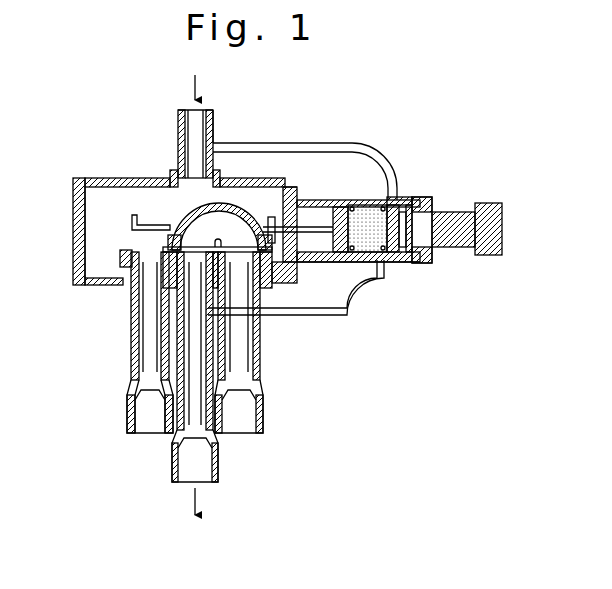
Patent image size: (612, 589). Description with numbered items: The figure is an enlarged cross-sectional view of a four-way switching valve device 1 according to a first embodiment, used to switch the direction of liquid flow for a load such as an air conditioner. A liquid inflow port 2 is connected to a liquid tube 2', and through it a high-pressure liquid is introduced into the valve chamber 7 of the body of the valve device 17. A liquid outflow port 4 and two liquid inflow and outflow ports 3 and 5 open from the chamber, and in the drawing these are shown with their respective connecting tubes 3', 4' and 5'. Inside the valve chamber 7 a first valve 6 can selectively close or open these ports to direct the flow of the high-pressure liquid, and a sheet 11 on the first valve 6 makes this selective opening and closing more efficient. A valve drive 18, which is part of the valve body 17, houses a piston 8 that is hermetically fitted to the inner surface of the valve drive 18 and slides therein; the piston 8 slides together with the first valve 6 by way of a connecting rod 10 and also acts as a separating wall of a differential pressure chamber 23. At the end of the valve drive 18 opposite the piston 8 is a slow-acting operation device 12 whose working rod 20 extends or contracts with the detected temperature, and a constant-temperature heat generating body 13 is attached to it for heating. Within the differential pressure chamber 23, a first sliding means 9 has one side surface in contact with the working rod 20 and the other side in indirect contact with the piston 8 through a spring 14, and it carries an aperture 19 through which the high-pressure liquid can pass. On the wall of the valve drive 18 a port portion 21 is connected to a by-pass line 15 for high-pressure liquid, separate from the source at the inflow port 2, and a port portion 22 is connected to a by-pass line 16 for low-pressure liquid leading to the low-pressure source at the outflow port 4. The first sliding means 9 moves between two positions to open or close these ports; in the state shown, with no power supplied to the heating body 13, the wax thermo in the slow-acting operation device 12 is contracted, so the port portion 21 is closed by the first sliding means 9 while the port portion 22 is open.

The flow control valve 1 is at (22, 219).
The liquid inflow port 2 is at (176, 138).
The liquid tube 2' is at (228, 119).
The liquid inflow and outflow port 3 is at (183, 258).
The first outlet pipe 3' is at (128, 342).
The liquid outflow port 4 is at (217, 202).
The second outlet pipe 4' is at (165, 367).
The liquid inflow and outflow port 5 is at (286, 197).
The third outlet pipe 5' is at (257, 342).
The first valve 6 is at (183, 222).
The valve chamber 7 is at (103, 197).
The piston 8 is at (335, 205).
The first sliding means 9 is at (418, 208).
The connecting rod 10 is at (132, 222).
The sheet 11 is at (170, 272).
The slow-acting operation device 12 is at (455, 215).
The heat generating body 13 is at (490, 256).
The spring 14 is at (385, 252).
The by-pass line for high-pressure liquid 15 is at (305, 149).
The by-pass line for low-pressure liquid 16 is at (350, 314).
The body of the valve device 17 is at (130, 178).
The valve drive 18 is at (303, 200).
The aperture 19 is at (405, 247).
The working rod 20 is at (420, 242).
The port portion 21 is at (400, 200).
The port portion 22 is at (325, 263).
The differential pressure chamber 23 is at (362, 215).